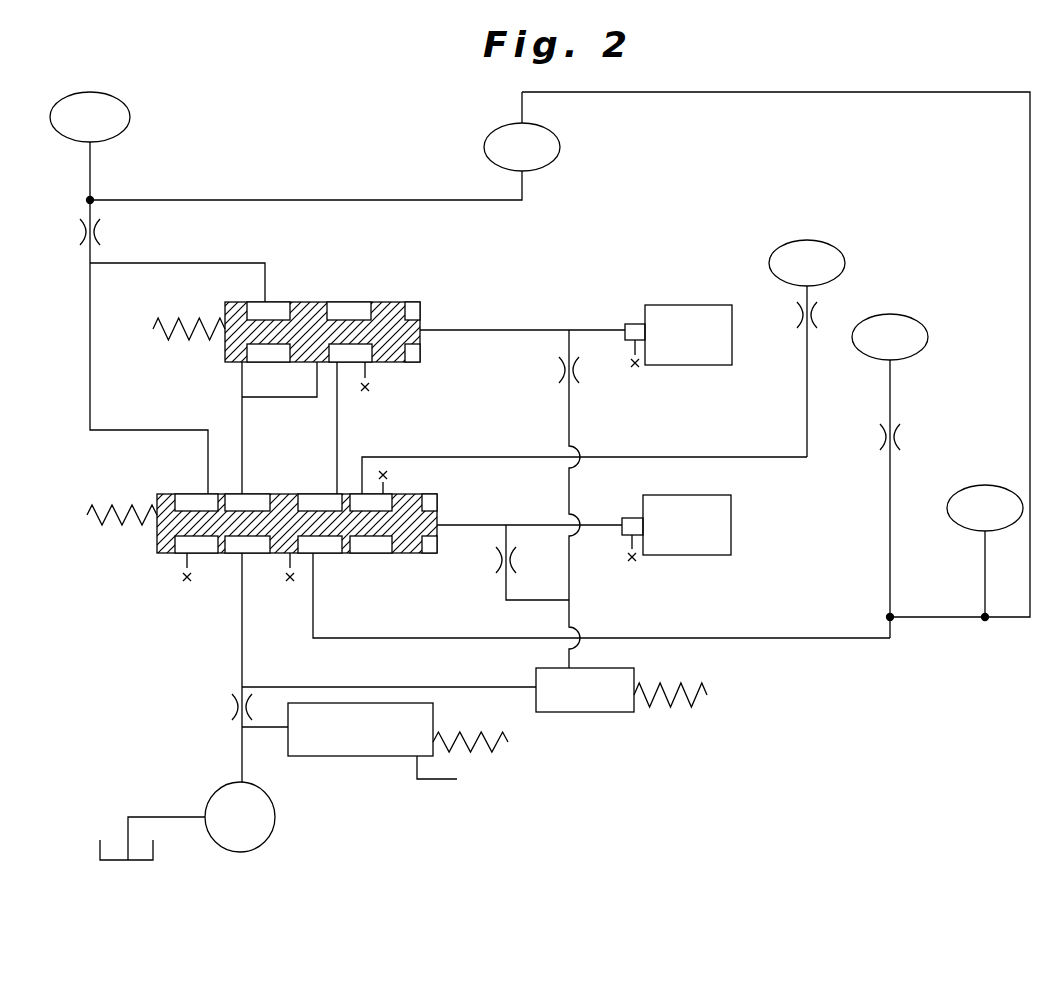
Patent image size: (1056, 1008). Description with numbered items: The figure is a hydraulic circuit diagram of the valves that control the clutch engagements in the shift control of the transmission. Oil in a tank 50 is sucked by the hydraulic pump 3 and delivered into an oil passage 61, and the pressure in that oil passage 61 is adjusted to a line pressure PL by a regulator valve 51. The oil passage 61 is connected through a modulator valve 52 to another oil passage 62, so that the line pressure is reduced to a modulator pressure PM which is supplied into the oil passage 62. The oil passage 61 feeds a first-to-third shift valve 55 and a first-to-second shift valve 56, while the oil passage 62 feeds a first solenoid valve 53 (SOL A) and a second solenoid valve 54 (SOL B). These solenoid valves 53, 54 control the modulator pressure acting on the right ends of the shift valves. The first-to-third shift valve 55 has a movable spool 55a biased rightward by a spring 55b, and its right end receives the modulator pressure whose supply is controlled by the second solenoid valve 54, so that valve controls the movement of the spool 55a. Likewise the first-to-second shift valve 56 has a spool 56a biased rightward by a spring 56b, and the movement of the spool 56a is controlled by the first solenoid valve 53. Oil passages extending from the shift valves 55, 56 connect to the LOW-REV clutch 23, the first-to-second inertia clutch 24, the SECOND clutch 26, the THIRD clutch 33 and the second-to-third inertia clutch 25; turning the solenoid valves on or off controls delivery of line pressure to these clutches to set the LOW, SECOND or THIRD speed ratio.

The hydraulic pump 3 is at (278, 812).
The LOW-REV clutch 23 is at (70, 128).
The 1-2 inertia clutch 24 is at (503, 158).
The 2-3 inertia clutch 25 is at (966, 519).
The SECOND clutch 26 is at (788, 274).
The THIRD clutch 33 is at (871, 348).
The tank 50 is at (97, 851).
The regulator valve 51 is at (343, 739).
The modulator valve 52 is at (566, 701).
The first solenoid valve 53 is at (705, 305).
The second solenoid valve 54 is at (730, 495).
The 1-2-3 shift valve 55 is at (280, 537).
The spool 55a is at (362, 530).
The spring 55b is at (125, 527).
The 1-2 shift valve 56 is at (308, 318).
The spool 56a is at (312, 302).
The spring 56b is at (185, 343).
The oil passage 61 is at (240, 632).
The oil passage 62 is at (582, 634).